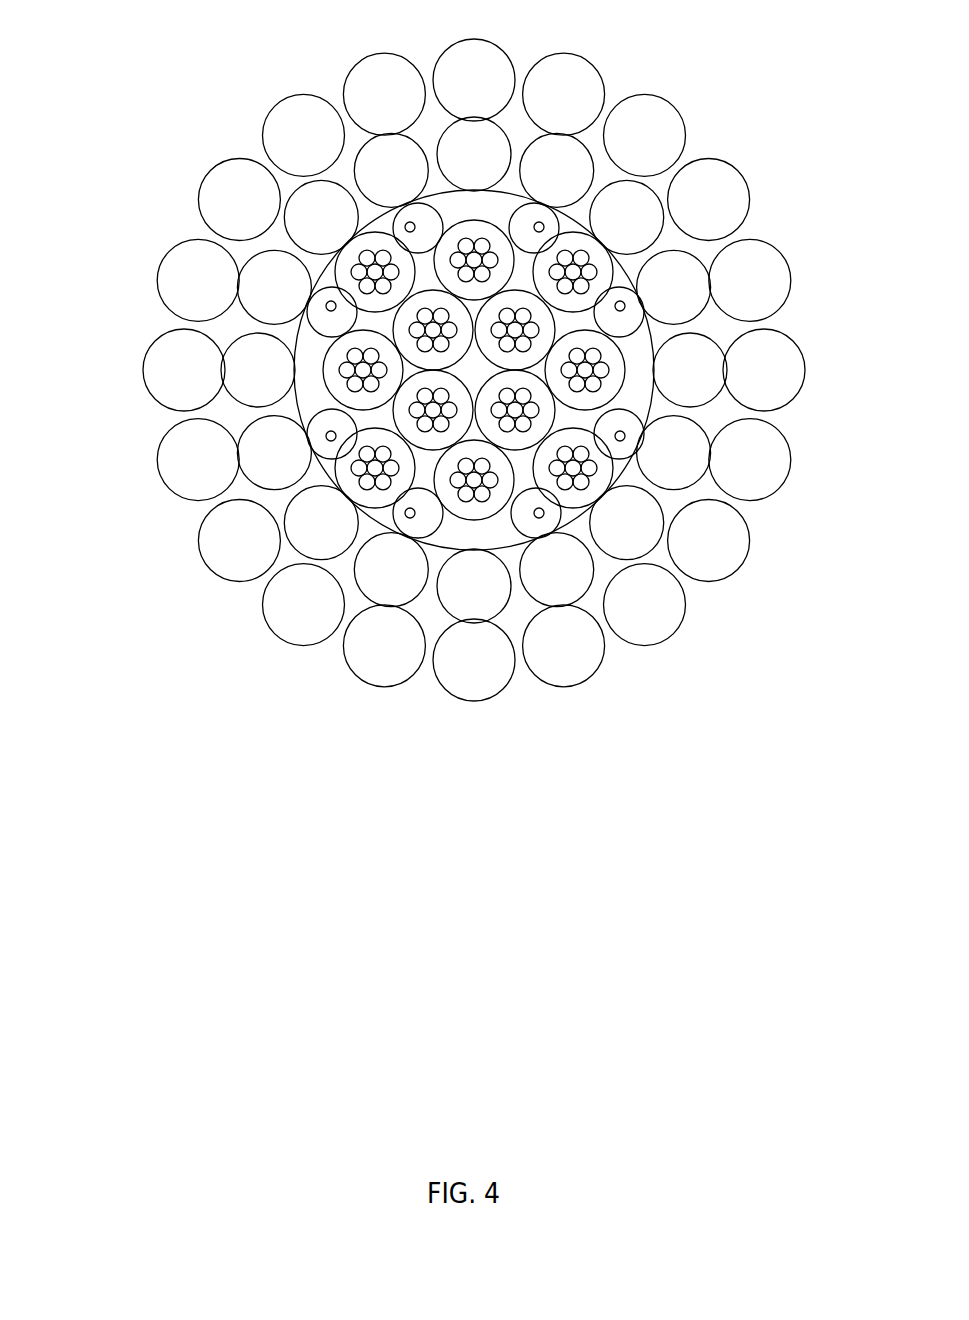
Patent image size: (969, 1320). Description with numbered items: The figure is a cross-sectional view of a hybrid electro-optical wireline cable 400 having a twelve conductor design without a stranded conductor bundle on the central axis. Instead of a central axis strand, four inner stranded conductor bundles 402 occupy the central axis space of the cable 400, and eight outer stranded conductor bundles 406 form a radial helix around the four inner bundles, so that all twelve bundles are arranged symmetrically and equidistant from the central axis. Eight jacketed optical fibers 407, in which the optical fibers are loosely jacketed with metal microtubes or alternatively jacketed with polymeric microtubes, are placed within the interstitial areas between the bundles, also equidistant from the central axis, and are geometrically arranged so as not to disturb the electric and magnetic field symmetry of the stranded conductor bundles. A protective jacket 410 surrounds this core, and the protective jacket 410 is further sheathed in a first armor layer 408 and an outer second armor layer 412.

The wireline cable 400 is at (449, 350).
The inner stranded conductor bundles 402 is at (577, 422).
The outer stranded conductor bundles 406 is at (470, 230).
The jacketed optical fibers 407 is at (586, 370).
The first armor layer 408 is at (242, 365).
The protective jacket 410 is at (517, 193).
The second armor layer 412 is at (177, 463).